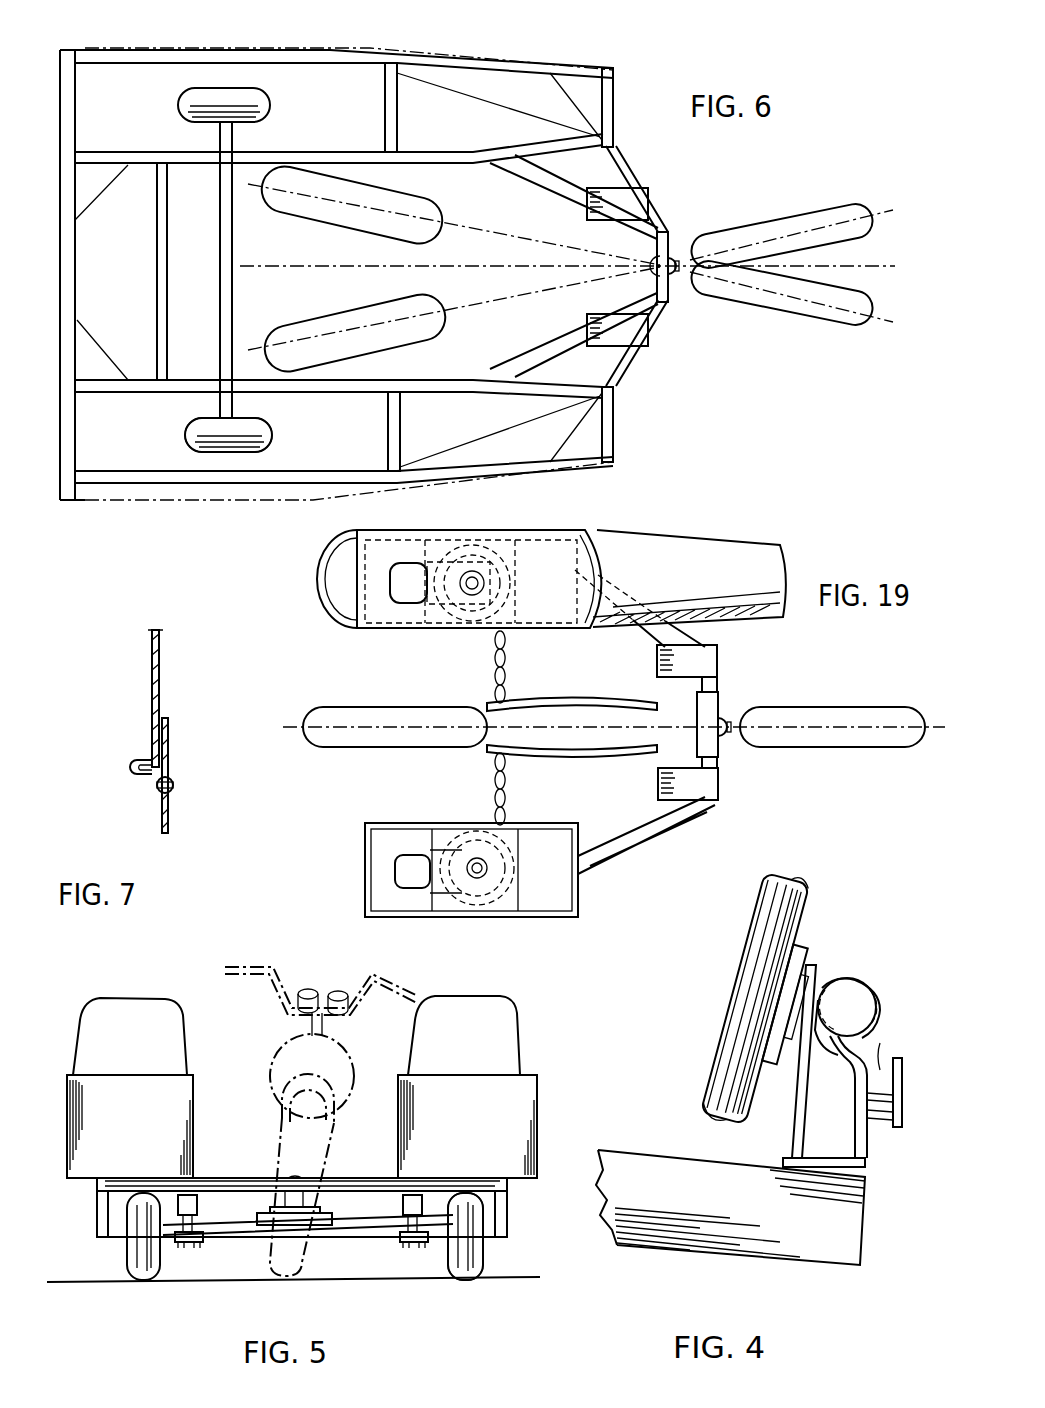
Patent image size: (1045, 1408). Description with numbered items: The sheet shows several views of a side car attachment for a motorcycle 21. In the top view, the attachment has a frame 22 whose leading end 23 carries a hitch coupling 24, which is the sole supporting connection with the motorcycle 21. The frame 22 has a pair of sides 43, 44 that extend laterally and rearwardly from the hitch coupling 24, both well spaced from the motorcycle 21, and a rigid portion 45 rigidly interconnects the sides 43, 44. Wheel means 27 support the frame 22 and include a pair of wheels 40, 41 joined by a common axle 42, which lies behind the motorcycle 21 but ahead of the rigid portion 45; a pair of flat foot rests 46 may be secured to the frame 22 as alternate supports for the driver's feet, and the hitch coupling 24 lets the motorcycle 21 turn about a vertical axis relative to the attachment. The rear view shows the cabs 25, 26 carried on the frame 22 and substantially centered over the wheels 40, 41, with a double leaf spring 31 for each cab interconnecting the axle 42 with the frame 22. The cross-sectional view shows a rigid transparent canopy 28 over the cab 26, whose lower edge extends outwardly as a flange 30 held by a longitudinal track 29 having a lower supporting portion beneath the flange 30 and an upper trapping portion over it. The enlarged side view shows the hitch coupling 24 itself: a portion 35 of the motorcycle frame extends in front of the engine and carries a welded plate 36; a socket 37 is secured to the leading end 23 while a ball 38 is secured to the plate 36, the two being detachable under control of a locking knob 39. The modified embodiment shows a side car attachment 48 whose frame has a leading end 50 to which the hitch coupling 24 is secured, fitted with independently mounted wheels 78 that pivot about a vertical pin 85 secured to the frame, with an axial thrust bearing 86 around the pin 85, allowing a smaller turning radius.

In FIG. 6, the motorcycle 21 is at (425, 265).
In FIG. 19, the motorcycle 21 is at (298, 718).
In FIG. 5, the motorcycle 21 is at (333, 992).
In FIG. 4, the motorcycle 21 is at (757, 918).
In FIG. 6, the frame 22 is at (305, 483).
In FIG. 5, the frame 22 is at (512, 1181).
In FIG. 6, the leading end 23 is at (668, 302).
In FIG. 4, the leading end 23 is at (838, 1236).
In FIG. 6, the hitch coupling 24 is at (672, 258).
In FIG. 19, the hitch coupling 24 is at (735, 722).
In FIG. 4, the hitch coupling 24 is at (880, 982).
In FIG. 6, the cab 25 is at (170, 503).
In FIG. 5, the cab 25 is at (467, 1087).
In FIG. 6, the cab 26 is at (207, 48).
In FIG. 7, the cab 26 is at (160, 830).
In FIG. 5, the cab 26 is at (130, 1088).
In FIG. 6, the wheel means 27 is at (183, 423).
In FIG. 5, the wheel means 27 is at (487, 1274).
In FIG. 7, the rigid transparent canopy 28 is at (152, 680).
In FIG. 7, the longitudinal track 29 is at (135, 770).
In FIG. 7, the flange 30 is at (158, 790).
In FIG. 5, the double leaf spring 31 is at (200, 1222).
In FIG. 19, the motorcycle frame portion 35 is at (610, 700).
In FIG. 4, the motorcycle frame portion 35 is at (748, 988).
In FIG. 4, the plate 36 is at (802, 955).
In FIG. 4, the socket 37 is at (845, 1008).
In FIG. 4, the ball 38 is at (875, 1015).
In FIG. 4, the locking knob 39 is at (900, 1075).
In FIG. 6, the wheel 40 is at (185, 100).
In FIG. 5, the wheel 40 is at (137, 1270).
In FIG. 6, the wheel 41 is at (185, 437).
In FIG. 5, the wheel 41 is at (462, 1270).
In FIG. 6, the axle 42 is at (232, 220).
In FIG. 5, the axle 42 is at (355, 1228).
In FIG. 6, the frame side 43 is at (392, 64).
In FIG. 6, the frame side 44 is at (403, 392).
In FIG. 6, the rigid portion 45 is at (162, 222).
In FIG. 6, the flat foot rest 46 is at (650, 202).
In FIG. 19, the flat foot rest 46 is at (718, 660).
In FIG. 19, the side car attachment 48 is at (640, 850).
In FIG. 19, the leading end 50 is at (720, 760).
In FIG. 19, the wheel 78 is at (408, 570).
In FIG. 19, the vertical pin 85 is at (470, 592).
In FIG. 19, the axial thrust bearing 86 is at (480, 556).